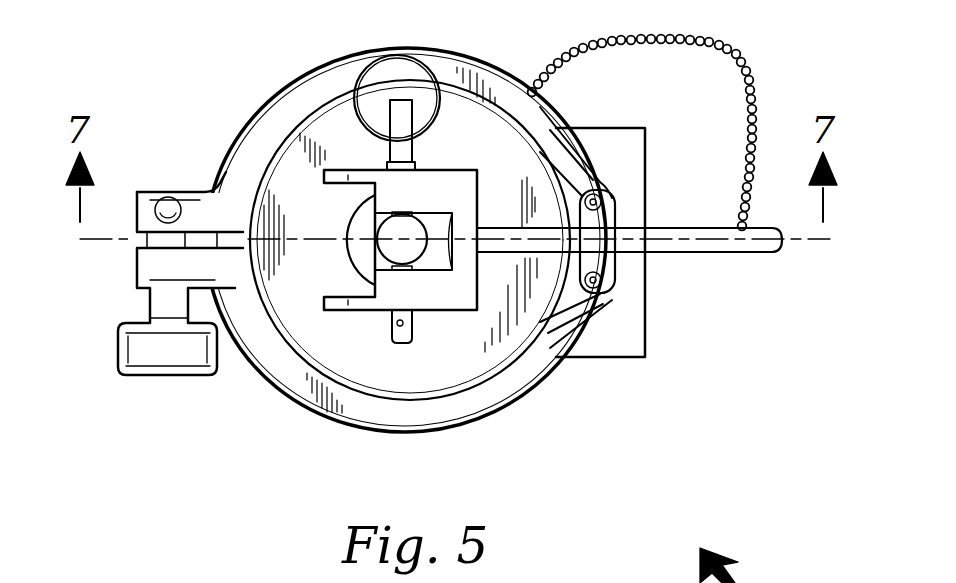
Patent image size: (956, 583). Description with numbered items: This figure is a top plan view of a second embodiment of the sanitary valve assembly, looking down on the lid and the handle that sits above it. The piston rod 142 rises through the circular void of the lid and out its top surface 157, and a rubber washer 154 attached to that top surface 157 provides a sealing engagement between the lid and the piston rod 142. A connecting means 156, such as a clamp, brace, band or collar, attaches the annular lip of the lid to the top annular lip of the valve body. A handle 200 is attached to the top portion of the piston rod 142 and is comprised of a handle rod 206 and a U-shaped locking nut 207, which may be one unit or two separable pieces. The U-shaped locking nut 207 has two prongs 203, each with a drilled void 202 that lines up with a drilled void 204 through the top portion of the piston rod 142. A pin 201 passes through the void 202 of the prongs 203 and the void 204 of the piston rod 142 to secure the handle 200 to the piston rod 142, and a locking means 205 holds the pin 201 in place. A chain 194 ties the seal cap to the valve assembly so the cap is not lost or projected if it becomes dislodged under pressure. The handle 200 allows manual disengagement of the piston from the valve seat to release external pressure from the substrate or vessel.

The piston rod 142 is at (408, 260).
The rubber washer 154 is at (433, 263).
The connecting means 156 is at (221, 192).
The top surface of the lid 157 is at (307, 196).
The chain 194 is at (748, 46).
The handle 200 is at (527, 343).
The pin 201 is at (412, 117).
The drilled void 202 is at (432, 157).
The prongs 203 is at (387, 300).
The drilled void 204 is at (432, 203).
The locking means 205 is at (393, 333).
The handle rod 206 is at (724, 253).
The U-shaped locking nut 207 is at (490, 260).